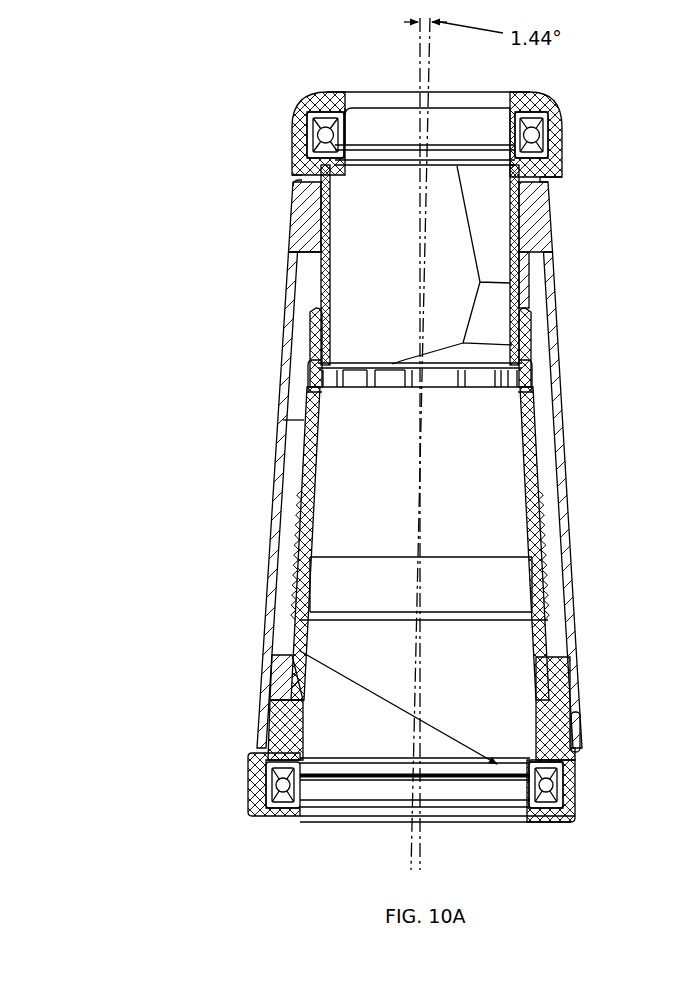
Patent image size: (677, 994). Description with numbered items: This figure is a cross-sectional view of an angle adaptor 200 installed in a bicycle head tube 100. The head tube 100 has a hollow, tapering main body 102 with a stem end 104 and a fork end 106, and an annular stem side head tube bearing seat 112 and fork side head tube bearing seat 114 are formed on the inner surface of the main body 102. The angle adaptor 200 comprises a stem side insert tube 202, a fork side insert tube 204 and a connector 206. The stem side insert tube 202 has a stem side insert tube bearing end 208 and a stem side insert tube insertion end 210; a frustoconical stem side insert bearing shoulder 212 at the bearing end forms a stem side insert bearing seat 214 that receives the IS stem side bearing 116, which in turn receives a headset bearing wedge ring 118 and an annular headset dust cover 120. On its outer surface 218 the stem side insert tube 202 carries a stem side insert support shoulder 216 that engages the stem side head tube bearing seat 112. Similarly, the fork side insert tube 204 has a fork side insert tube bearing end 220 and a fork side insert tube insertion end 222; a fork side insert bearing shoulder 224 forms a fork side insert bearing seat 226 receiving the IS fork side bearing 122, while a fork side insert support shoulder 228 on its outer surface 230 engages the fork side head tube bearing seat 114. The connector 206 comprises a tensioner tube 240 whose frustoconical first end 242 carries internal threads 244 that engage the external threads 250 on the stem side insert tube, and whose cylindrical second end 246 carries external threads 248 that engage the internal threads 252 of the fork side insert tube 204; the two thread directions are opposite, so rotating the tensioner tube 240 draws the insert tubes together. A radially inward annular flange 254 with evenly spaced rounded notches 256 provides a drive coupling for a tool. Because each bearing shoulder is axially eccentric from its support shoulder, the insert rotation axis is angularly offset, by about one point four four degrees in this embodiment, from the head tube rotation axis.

The head tube 100 is at (233, 347).
The main body 102 is at (280, 440).
The stem end 104 is at (290, 192).
The fork end 106 is at (250, 740).
The stem side head tube bearing seat 112 is at (334, 196).
The fork side head tube bearing seat 114 is at (300, 713).
The IS stem side bearing 116 is at (345, 131).
The headset bearing wedge ring 118 is at (356, 108).
The headset dust cover 120 is at (318, 95).
The IS fork side bearing 122 is at (298, 790).
The angle adaptor 200 is at (183, 56).
The stem side insert tube 202 is at (310, 273).
The fork side insert tube 204 is at (288, 637).
The connector 206 is at (303, 522).
The stem side insert tube bearing end 208 is at (290, 125).
The stem side insert tube insertion end 210 is at (462, 375).
The stem side insert bearing shoulder 212 is at (499, 168).
The stem side insert bearing seat 214 is at (336, 167).
The stem side insert support shoulder 216 is at (541, 214).
The outer surface 218 is at (529, 263).
The fork side insert tube bearing end 220 is at (250, 829).
The fork side insert tube insertion end 222 is at (542, 545).
The fork side insert bearing shoulder 224 is at (555, 802).
The fork side insert bearing seat 226 is at (498, 766).
The fork side insert support shoulder 228 is at (577, 690).
The outer surface 230 is at (553, 652).
The tensioner tube 240 is at (287, 419).
The first end 242 is at (310, 303).
The threads 244 is at (322, 329).
The second end 246 is at (480, 632).
The threads 248 is at (283, 549).
The threads 250 is at (527, 300).
The threads 252 is at (318, 590).
The annular flange 254 is at (350, 388).
The rounded notches 256 is at (408, 388).